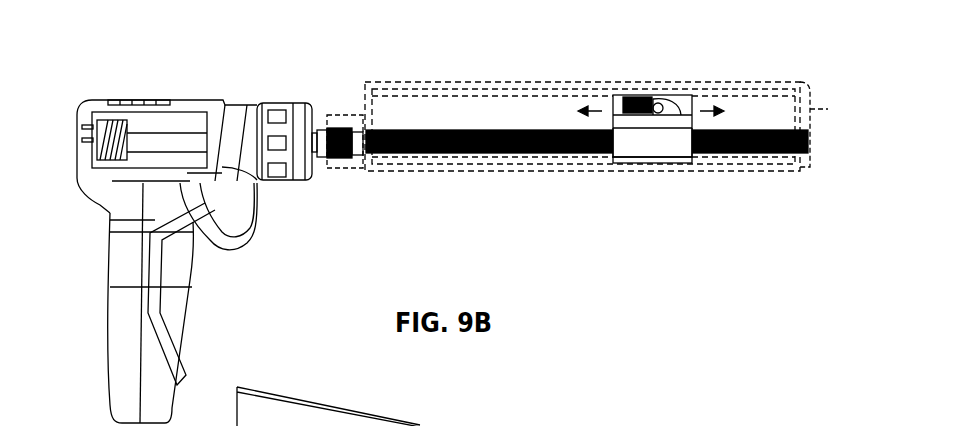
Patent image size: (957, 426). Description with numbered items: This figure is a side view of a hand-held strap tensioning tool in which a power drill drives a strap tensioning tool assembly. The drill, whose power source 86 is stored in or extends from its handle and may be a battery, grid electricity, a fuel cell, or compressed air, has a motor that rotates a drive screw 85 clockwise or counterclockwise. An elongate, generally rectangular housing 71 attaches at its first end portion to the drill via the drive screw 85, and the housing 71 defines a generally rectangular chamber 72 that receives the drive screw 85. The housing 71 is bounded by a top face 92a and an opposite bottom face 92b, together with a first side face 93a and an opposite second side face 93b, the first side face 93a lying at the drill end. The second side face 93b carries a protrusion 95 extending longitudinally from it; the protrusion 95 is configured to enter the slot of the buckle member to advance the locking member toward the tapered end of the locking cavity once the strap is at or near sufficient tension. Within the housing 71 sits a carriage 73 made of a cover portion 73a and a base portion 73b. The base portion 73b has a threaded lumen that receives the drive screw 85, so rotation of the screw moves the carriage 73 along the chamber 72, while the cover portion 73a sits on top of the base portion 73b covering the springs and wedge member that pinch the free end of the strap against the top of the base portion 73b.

The elongate housing 71 is at (783, 76).
The chamber 72 is at (422, 107).
The carriage 73 is at (695, 116).
The cover portion 73a is at (618, 100).
The base portion 73b is at (657, 160).
The drive screw 85 is at (415, 152).
The power source 86 is at (123, 400).
The top face 92a is at (485, 83).
The bottom face 92b is at (567, 180).
The first side face 93a is at (362, 113).
The second side face 93b is at (810, 134).
The protrusion 95 is at (826, 109).